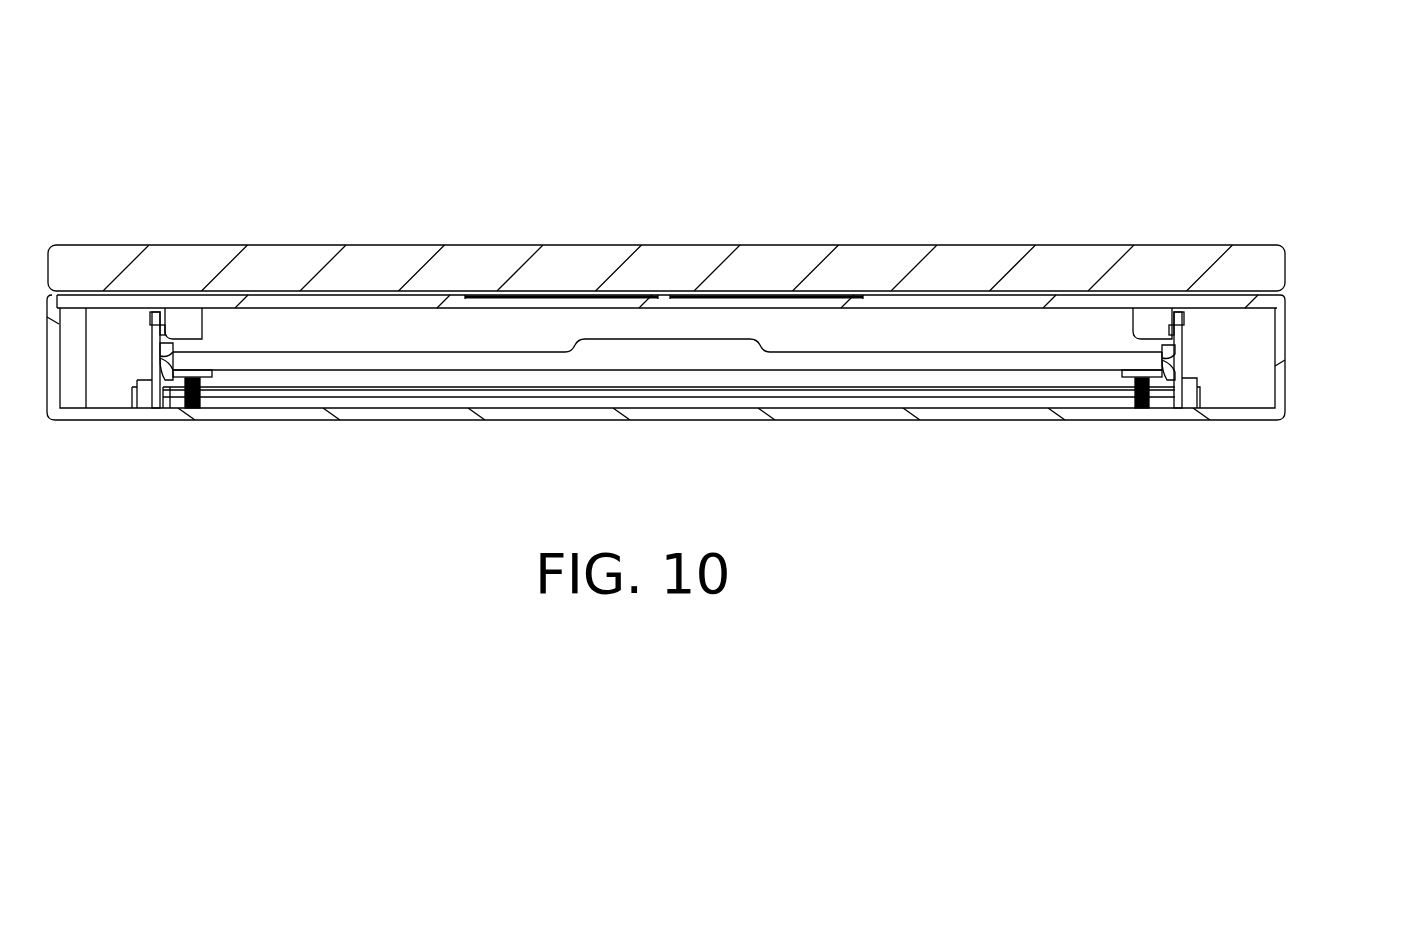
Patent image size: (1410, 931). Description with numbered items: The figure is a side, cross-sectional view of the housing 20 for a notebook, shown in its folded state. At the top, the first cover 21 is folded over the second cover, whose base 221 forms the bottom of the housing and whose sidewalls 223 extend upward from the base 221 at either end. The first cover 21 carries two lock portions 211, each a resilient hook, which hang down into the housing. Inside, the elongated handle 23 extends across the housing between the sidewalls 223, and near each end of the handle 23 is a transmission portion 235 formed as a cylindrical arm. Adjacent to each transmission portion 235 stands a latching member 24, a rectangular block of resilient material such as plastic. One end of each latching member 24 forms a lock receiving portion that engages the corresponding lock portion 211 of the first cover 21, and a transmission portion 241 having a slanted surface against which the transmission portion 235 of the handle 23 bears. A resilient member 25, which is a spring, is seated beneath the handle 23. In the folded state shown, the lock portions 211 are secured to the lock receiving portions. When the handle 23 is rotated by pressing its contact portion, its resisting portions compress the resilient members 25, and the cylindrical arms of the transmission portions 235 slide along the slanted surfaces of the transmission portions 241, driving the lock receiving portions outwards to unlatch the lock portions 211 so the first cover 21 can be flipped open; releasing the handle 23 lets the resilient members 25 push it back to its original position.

The housing 20 is at (670, 105).
The first cover 21 is at (1068, 258).
The lock portion 211 is at (1148, 325).
The base 221 is at (1180, 410).
The sidewall 223 is at (1280, 345).
The handle 23 is at (1040, 363).
The transmission portion 235 is at (1162, 355).
The latching member 24 is at (1180, 318).
The transmission portion 241 is at (1173, 358).
The resilient member 25 is at (1136, 395).